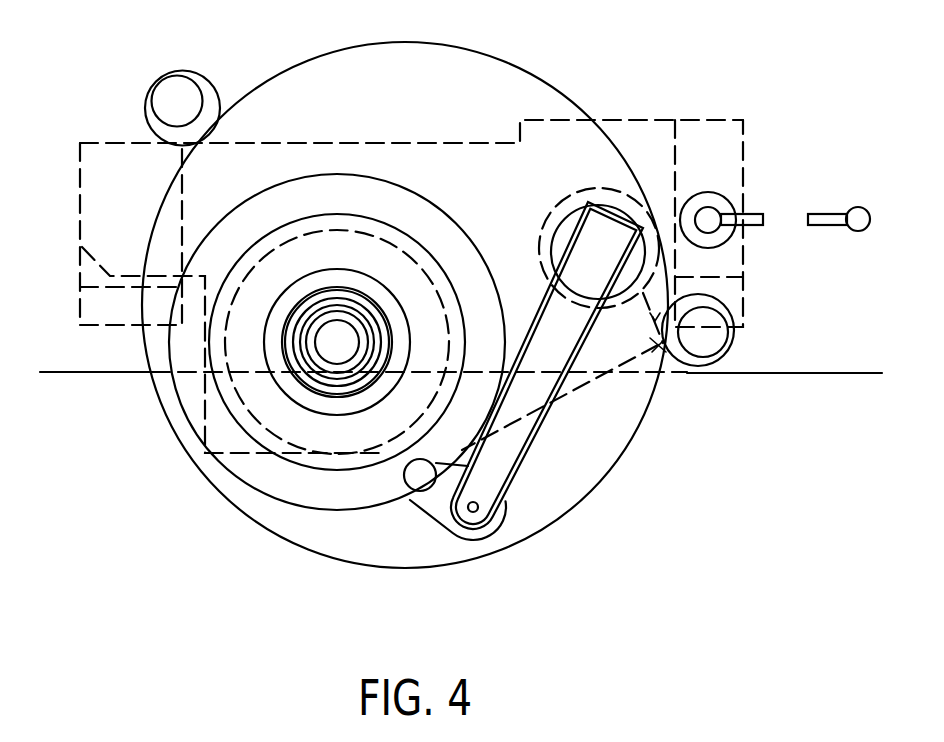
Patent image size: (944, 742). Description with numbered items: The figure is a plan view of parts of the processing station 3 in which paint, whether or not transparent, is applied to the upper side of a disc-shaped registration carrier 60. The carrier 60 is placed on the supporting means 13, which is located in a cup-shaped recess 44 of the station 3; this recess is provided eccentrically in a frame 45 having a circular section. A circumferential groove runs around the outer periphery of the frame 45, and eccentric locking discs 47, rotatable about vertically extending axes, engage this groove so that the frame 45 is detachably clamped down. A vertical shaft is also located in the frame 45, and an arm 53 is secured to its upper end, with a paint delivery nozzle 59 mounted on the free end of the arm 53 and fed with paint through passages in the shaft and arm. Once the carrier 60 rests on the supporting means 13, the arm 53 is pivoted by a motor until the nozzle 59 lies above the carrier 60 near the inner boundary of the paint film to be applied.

The station 3 is at (207, 499).
The supporting means 13 is at (342, 338).
The cup-shaped recess 44 is at (358, 190).
The frame 45 is at (518, 62).
The eccentric locking discs 47 is at (208, 92).
The arm 53 is at (503, 443).
The paint delivery nozzle 59 is at (418, 476).
The disc-shaped registration carrier 60 is at (407, 230).